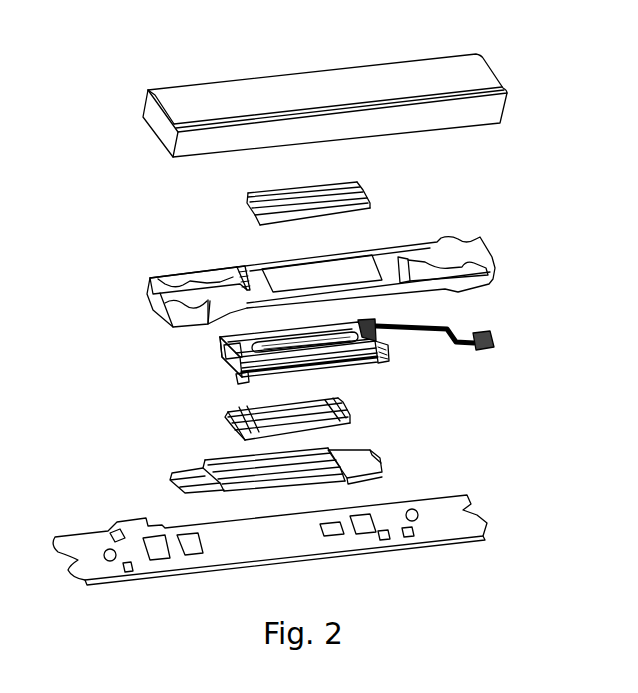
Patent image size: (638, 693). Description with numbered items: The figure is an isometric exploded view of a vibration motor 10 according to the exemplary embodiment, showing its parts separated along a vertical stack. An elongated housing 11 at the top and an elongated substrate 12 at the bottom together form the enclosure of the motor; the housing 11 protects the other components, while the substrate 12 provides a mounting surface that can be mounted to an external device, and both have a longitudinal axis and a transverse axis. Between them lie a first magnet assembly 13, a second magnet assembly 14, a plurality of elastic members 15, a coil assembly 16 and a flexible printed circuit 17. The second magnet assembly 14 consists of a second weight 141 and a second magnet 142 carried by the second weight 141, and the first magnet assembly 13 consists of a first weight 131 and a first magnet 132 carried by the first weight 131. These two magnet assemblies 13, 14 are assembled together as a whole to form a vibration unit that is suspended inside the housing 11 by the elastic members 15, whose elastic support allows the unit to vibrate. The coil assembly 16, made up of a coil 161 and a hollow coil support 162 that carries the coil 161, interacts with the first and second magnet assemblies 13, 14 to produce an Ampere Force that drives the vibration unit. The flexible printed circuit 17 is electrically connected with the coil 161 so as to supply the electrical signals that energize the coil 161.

The vibration motor 10 is at (318, 45).
The housing 11 is at (465, 78).
The substrate 12 is at (452, 528).
The first magnet assembly 13 is at (450, 392).
The first weight 131 is at (382, 462).
The first magnet 132 is at (345, 405).
The second magnet assembly 14 is at (100, 222).
The second weight 141 is at (160, 298).
The second magnet 142 is at (250, 206).
The elastic members 15 is at (494, 282).
The coil assembly 16 is at (84, 352).
The coil 161 is at (220, 351).
The hollow coil support 162 is at (240, 378).
The flexible printed circuit 17 is at (498, 349).